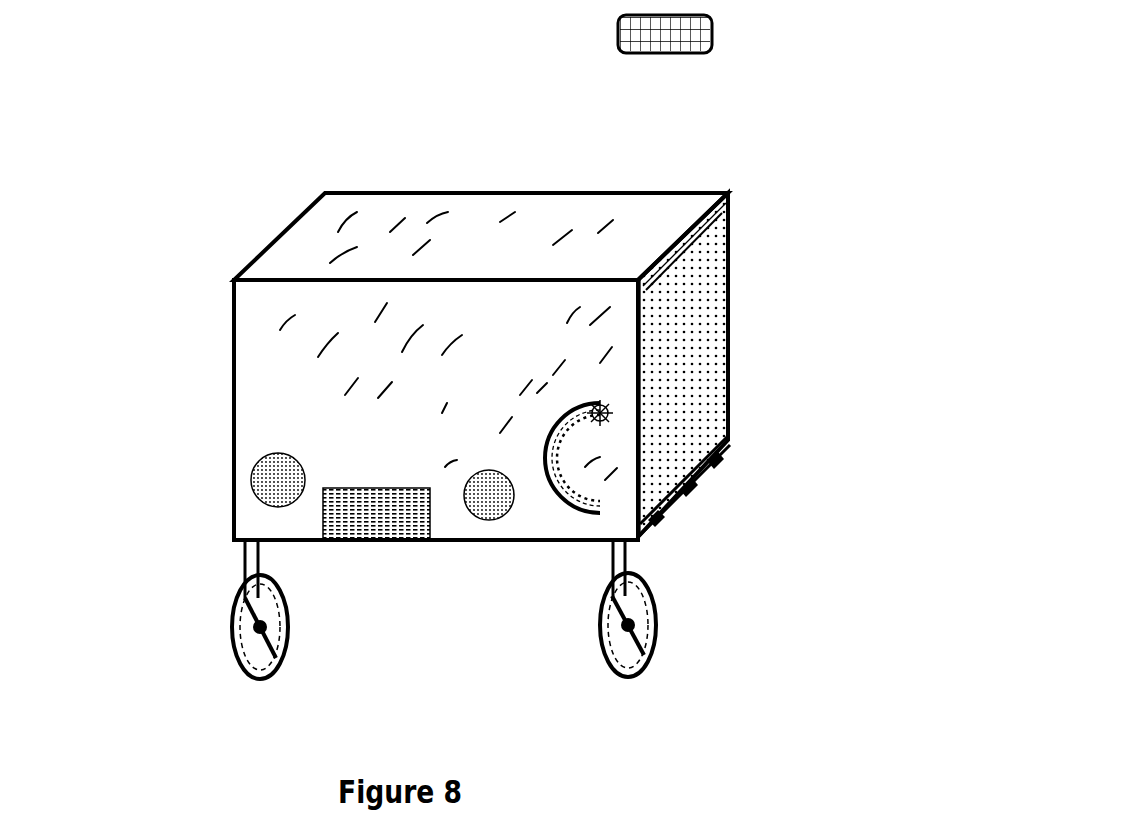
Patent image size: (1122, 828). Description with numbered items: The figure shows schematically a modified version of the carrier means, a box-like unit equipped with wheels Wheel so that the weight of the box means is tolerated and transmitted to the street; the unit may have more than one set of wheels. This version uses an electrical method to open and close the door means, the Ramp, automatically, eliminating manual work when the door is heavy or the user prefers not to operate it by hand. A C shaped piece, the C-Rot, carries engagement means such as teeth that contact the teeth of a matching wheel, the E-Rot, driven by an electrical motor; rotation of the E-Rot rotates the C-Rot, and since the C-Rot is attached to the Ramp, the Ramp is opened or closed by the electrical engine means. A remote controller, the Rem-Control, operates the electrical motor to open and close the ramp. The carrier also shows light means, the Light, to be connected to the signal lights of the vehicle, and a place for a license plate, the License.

The license plate place License is at (412, 487).
The light means Light is at (265, 455).
The C shaped piece C-Rot is at (583, 398).
The matching wheel E-Rot is at (626, 415).
The door means Ramp is at (712, 277).
The wheels Wheel is at (655, 588).
The remote controller Rem-Control is at (715, 35).